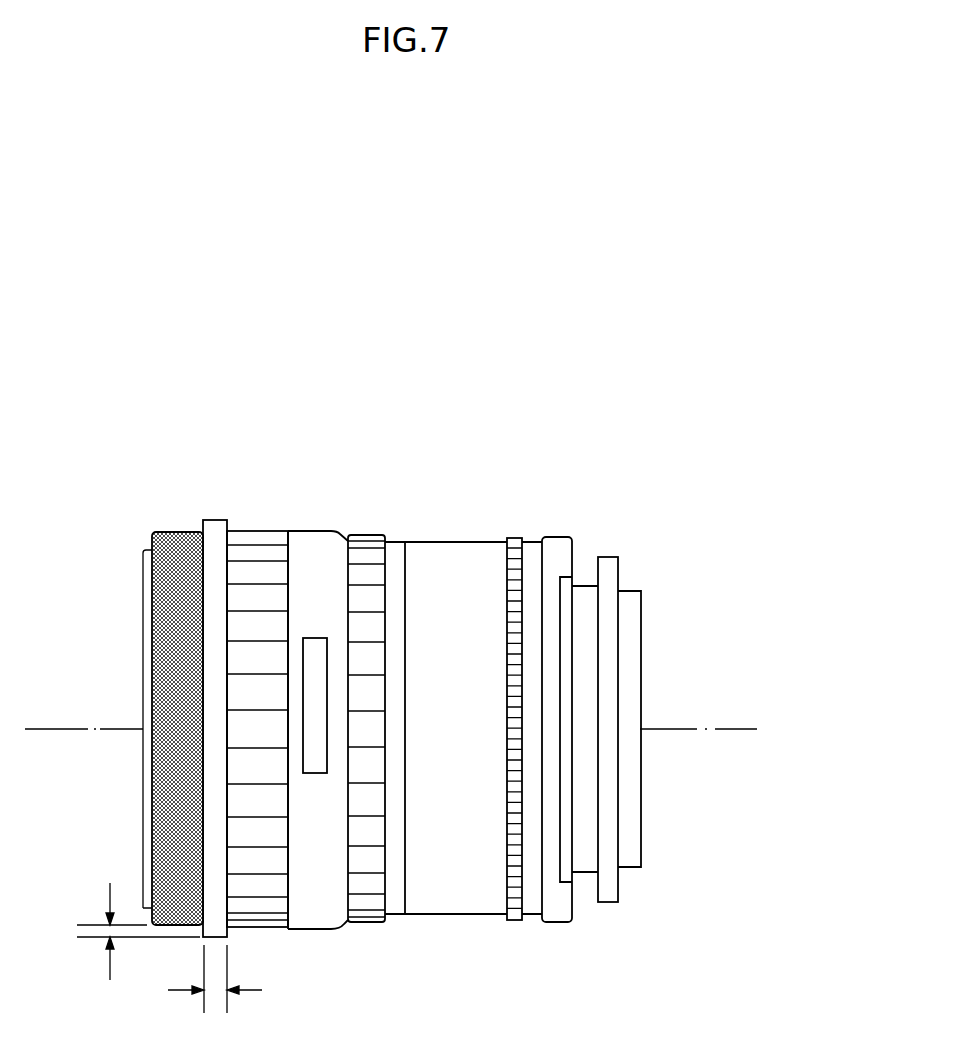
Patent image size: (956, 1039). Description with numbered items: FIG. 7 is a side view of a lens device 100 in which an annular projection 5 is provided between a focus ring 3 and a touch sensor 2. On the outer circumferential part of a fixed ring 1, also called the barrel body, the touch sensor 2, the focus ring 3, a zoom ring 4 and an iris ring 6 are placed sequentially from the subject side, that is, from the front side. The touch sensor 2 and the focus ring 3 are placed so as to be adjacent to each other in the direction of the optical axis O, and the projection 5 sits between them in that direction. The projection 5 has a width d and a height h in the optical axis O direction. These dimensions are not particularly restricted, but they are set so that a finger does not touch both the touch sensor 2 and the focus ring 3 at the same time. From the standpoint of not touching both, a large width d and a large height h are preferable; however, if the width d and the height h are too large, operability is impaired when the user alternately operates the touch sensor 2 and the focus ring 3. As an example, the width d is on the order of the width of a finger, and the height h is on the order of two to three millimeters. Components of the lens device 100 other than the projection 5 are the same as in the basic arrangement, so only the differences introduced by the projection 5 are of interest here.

The fixed ring 1 is at (445, 921).
The touch sensor 2 is at (175, 532).
The focus ring 3 is at (258, 552).
The zoom ring 4 is at (365, 558).
The annular projection 5 is at (213, 538).
The iris ring 6 is at (510, 542).
The lens device 100 is at (626, 437).
The optical axis O is at (123, 732).
The height h is at (138, 933).
The width d is at (213, 979).